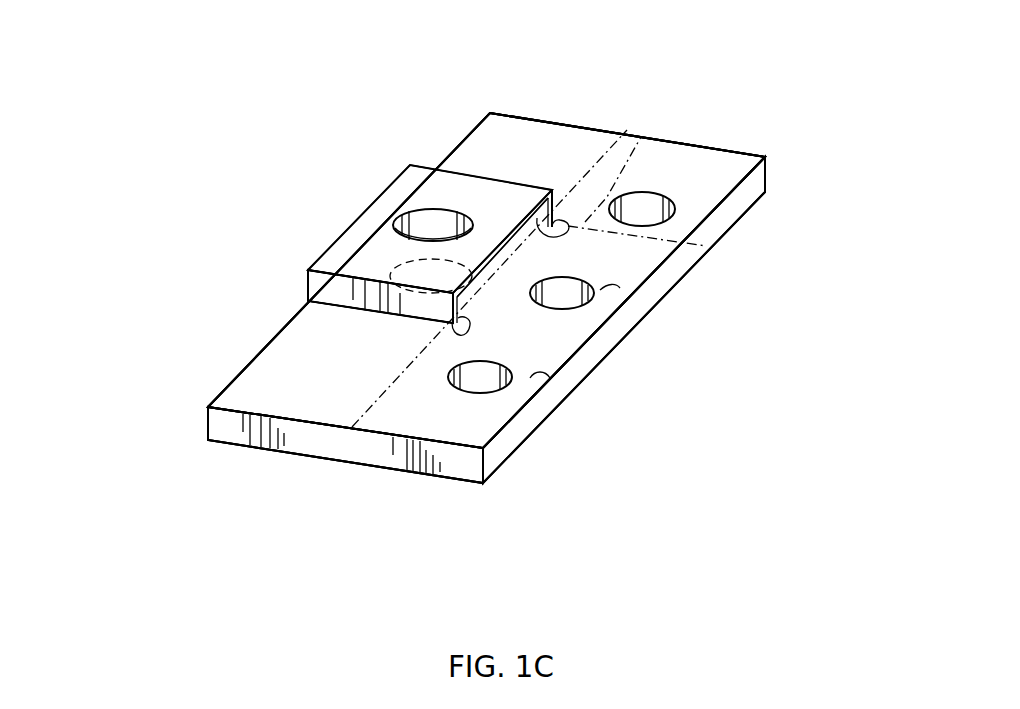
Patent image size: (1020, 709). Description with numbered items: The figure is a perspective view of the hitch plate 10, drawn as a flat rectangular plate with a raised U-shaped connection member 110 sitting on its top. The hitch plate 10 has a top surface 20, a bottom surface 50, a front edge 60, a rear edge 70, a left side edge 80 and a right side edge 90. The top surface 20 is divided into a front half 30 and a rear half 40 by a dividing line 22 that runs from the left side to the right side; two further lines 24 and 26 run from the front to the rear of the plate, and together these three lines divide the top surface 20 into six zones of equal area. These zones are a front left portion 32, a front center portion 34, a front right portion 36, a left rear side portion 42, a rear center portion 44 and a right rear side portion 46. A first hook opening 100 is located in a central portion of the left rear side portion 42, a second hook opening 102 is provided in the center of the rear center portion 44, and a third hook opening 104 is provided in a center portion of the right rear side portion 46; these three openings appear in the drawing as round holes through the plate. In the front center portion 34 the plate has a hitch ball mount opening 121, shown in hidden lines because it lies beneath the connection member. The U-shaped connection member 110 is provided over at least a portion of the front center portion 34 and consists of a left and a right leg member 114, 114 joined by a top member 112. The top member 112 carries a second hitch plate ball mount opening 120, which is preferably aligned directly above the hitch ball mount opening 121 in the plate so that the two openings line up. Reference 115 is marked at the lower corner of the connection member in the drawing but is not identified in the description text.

The hitch plate 10 is at (780, 148).
The top surface 20 is at (323, 410).
The dividing line 22 is at (365, 407).
The line 24 is at (642, 136).
The line 26 is at (492, 317).
The front half 30 is at (257, 378).
The front left portion 32 is at (487, 133).
The front center portion 34 is at (505, 263).
The front right portion 36 is at (260, 397).
The rear half 40 is at (725, 175).
The left rear side portion 42 is at (718, 160).
The rear center portion 44 is at (618, 285).
The right rear side portion 46 is at (532, 375).
The bottom surface 50 is at (307, 458).
The front edge 60 is at (205, 422).
The rear edge 70 is at (495, 458).
The left side edge 80 is at (532, 118).
The right side edge 90 is at (462, 470).
The first hook opening 100 is at (652, 212).
The second hook opening 102 is at (568, 296).
The third hook opening 104 is at (485, 378).
The U-shaped connection member 110 is at (397, 170).
The top member 112 is at (335, 237).
The leg member 114 is at (312, 285).
The tab bottom edge 115 is at (303, 305).
The second hitch plate ball mount opening 120 is at (432, 222).
The hitch ball mount opening 121 is at (402, 265).